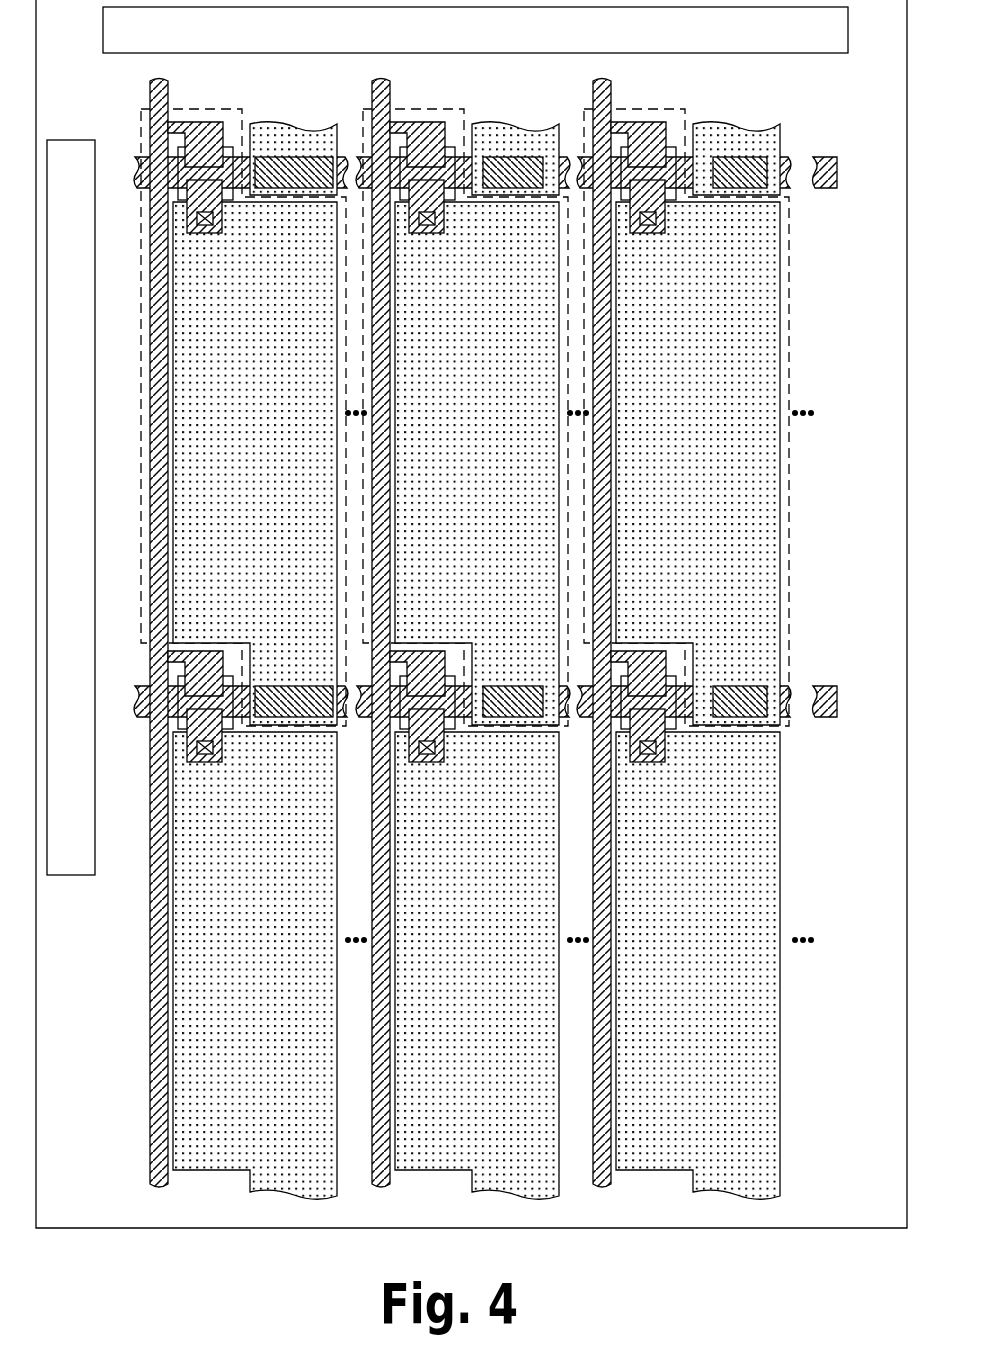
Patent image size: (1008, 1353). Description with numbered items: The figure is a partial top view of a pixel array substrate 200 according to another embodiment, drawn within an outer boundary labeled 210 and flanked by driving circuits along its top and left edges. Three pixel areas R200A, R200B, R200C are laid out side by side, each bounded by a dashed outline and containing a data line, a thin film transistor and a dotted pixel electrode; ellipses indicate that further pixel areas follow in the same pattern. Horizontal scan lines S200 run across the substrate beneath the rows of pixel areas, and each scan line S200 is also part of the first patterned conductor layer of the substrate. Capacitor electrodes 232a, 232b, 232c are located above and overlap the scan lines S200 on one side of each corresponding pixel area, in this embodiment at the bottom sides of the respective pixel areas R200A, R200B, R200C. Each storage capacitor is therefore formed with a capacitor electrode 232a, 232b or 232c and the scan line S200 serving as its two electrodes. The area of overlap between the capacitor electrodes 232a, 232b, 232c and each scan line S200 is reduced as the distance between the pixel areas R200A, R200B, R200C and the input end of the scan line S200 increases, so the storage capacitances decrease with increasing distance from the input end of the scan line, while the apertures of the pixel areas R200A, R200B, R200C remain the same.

The pixel array substrate 200 is at (471, 651).
The substrate 210 is at (825, 1228).
The pixel area R200A is at (215, 108).
The pixel area R200B is at (437, 108).
The pixel area R200C is at (658, 108).
The scan line S200 is at (822, 157).
The capacitor electrode 232a is at (292, 686).
The capacitor electrode 232b is at (514, 686).
The capacitor electrode 232c is at (737, 686).